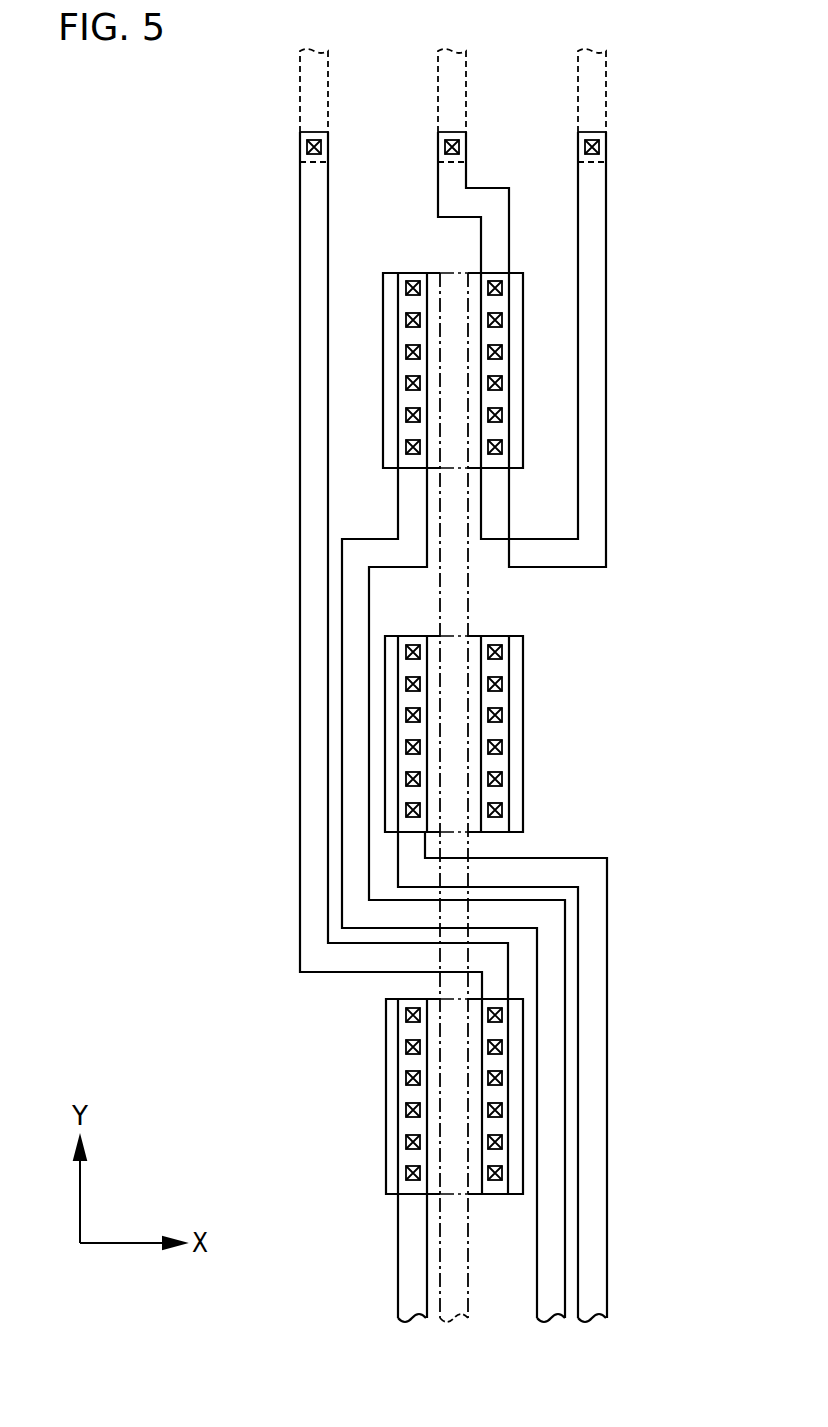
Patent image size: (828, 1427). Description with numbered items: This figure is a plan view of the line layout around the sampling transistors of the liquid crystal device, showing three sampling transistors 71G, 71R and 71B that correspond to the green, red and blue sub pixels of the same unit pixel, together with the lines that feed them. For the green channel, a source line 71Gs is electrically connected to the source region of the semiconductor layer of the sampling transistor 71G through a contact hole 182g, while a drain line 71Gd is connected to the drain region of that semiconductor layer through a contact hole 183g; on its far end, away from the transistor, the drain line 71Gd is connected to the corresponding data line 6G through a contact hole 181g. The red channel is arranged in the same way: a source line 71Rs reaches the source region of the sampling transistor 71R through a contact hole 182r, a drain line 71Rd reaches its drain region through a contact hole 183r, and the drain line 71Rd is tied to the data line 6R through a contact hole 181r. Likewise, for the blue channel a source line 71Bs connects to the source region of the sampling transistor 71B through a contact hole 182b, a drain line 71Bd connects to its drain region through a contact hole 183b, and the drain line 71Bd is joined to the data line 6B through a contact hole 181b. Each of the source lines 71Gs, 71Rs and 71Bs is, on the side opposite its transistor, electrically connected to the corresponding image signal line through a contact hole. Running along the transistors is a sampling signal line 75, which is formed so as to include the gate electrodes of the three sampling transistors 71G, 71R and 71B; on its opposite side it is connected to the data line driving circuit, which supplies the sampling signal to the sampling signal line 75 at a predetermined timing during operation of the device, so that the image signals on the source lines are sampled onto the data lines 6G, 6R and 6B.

The data line 6B is at (300, 88).
The data line 6G is at (438, 88).
The data line 6R is at (578, 88).
The contact hole 181b is at (306, 147).
The contact hole 181g is at (446, 147).
The contact hole 181r is at (586, 147).
The drain line 71Bd is at (313, 585).
The drain line 71Gd is at (489, 244).
The drain line 71Rd is at (595, 262).
The sampling transistor 71G is at (525, 281).
The sampling transistor 71R is at (527, 652).
The sampling transistor 71B is at (387, 1030).
The contact hole 182g is at (405, 351).
The contact hole 183g is at (502, 352).
The contact hole 182r is at (412, 643).
The contact hole 183r is at (503, 713).
The contact hole 182b is at (412, 1078).
The contact hole 183b is at (497, 1182).
The source line 71Gs is at (407, 523).
The source line 71Rs is at (608, 1003).
The source line 71Bs is at (408, 1238).
The sampling signal line 75 is at (468, 1280).